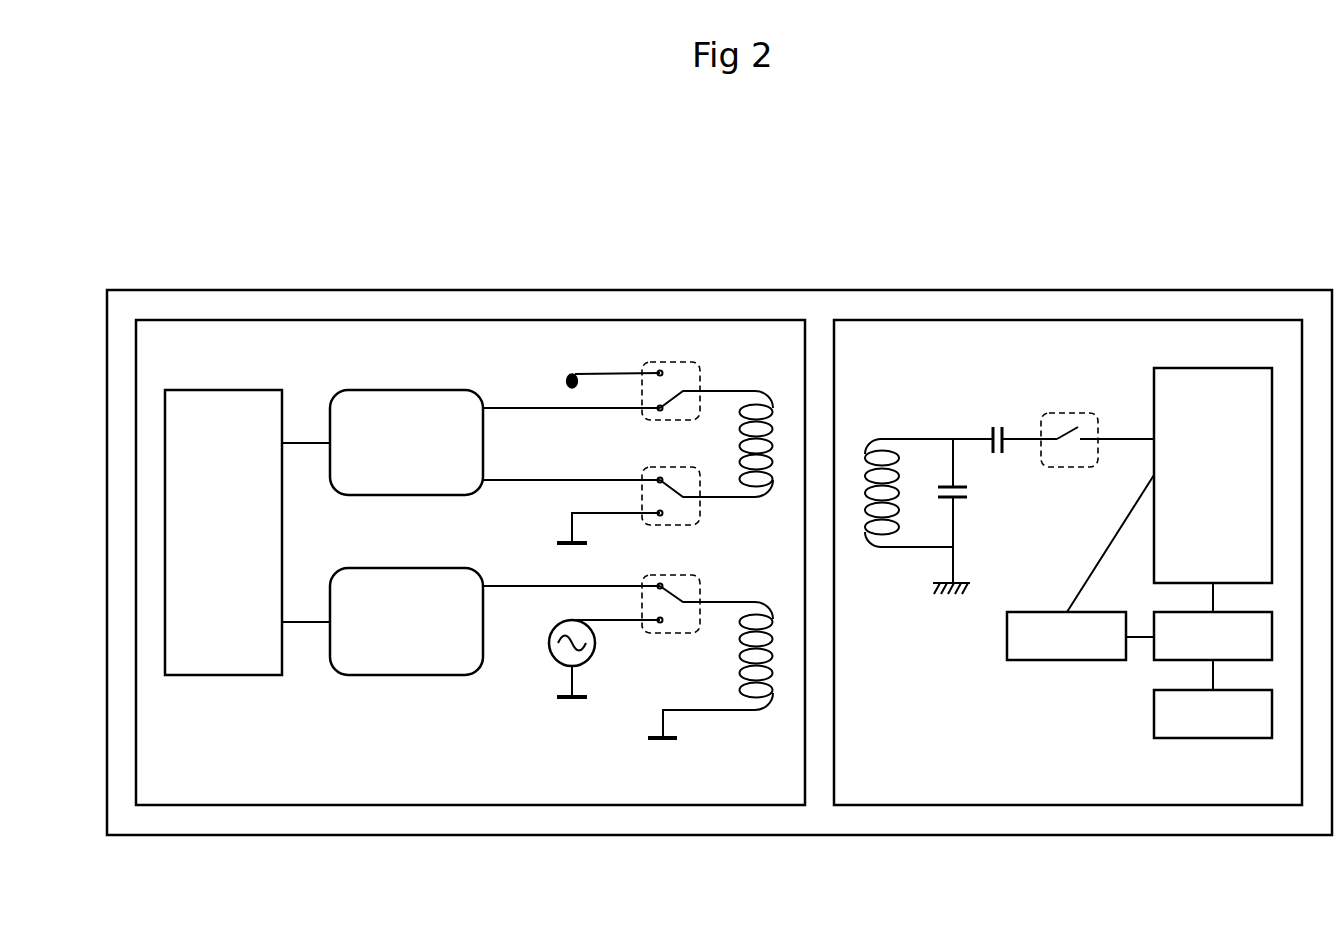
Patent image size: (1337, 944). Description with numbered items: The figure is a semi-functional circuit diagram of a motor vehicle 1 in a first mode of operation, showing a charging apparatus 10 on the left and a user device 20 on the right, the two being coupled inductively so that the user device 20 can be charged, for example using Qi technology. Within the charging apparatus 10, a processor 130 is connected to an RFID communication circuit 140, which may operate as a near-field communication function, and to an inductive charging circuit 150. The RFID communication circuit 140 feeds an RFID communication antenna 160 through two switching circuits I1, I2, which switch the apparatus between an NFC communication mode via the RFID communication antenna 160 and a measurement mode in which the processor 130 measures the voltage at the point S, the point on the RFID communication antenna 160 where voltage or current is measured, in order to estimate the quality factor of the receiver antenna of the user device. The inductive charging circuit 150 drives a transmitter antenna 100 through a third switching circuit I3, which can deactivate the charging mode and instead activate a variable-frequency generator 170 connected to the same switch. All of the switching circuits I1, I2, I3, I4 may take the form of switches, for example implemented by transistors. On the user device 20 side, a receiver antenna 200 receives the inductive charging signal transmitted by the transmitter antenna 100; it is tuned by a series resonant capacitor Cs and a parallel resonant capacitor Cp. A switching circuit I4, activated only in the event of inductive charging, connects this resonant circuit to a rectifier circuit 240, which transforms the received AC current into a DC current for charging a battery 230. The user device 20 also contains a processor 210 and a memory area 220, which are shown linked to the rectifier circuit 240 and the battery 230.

The motor vehicle 1 is at (1050, 290).
The charging apparatus 10 is at (420, 320).
The user device 20 is at (1168, 320).
The transmitter antenna 100 is at (748, 730).
The processor 130 is at (223, 532).
The RFID communication circuit 140 is at (406, 442).
The inductive charging circuit 150 is at (406, 621).
The RFID communication antenna 160 is at (747, 372).
The variable-frequency generator 170 is at (550, 650).
The receiver antenna 200 is at (884, 425).
The processor 210 is at (1213, 636).
The memory area 220 is at (1213, 714).
The battery 230 is at (1066, 636).
The rectifier circuit 240 is at (1213, 475).
The point S is at (567, 352).
The switching circuit I1 is at (698, 376).
The switching circuit I2 is at (656, 491).
The switching circuit I3 is at (663, 589).
The switching circuit I4 is at (1097, 424).
The series resonant capacitor Cs is at (990, 427).
The parallel resonant capacitor Cp is at (965, 481).